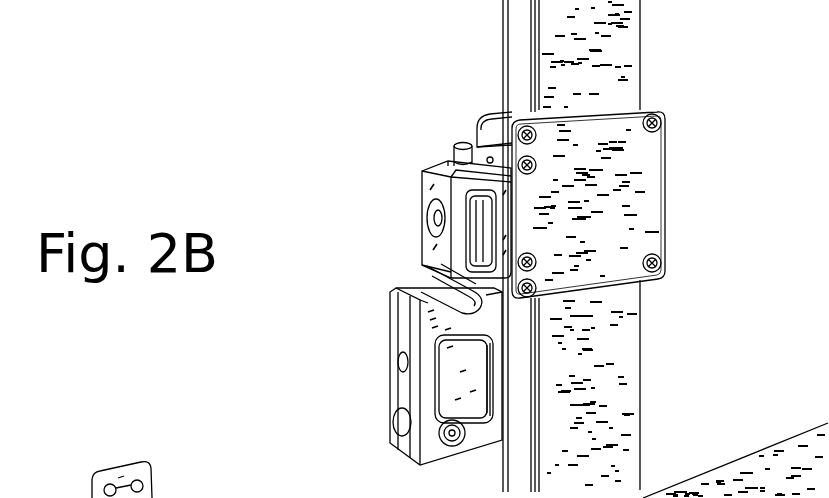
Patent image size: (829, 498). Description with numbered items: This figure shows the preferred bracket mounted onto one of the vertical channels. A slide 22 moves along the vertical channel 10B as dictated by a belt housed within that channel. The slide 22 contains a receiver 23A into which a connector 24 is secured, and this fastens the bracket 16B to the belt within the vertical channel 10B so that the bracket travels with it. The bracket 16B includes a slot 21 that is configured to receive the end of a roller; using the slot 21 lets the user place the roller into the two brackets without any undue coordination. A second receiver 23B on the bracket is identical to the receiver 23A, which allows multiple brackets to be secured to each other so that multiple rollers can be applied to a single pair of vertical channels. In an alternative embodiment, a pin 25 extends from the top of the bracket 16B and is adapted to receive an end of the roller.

The vertical channel 10B is at (610, 420).
The slide 22 is at (675, 185).
The receiver 23A is at (478, 145).
The connector 24 is at (498, 155).
The pin 25 is at (448, 150).
The bracket 16B is at (407, 197).
The slot 21 is at (430, 280).
The receiver 23B is at (383, 398).